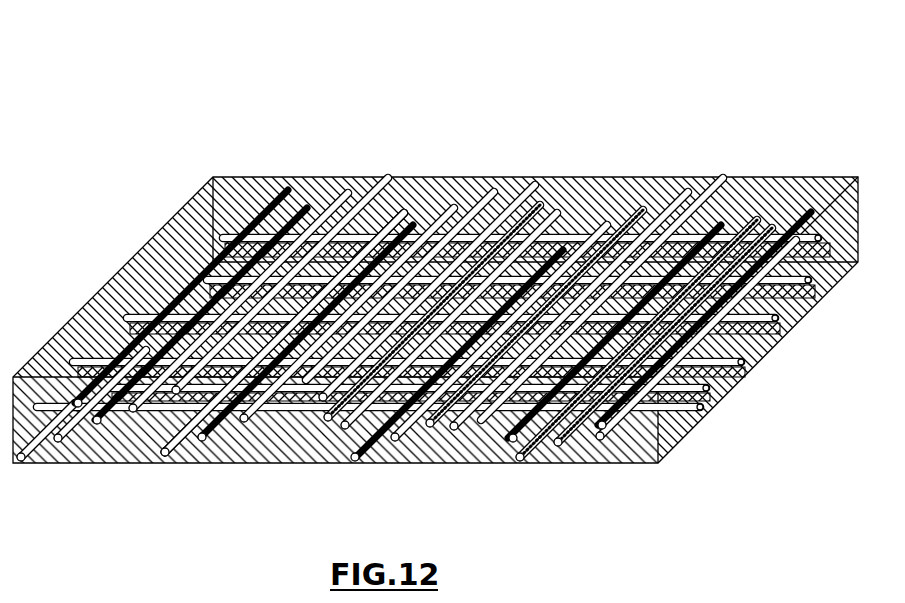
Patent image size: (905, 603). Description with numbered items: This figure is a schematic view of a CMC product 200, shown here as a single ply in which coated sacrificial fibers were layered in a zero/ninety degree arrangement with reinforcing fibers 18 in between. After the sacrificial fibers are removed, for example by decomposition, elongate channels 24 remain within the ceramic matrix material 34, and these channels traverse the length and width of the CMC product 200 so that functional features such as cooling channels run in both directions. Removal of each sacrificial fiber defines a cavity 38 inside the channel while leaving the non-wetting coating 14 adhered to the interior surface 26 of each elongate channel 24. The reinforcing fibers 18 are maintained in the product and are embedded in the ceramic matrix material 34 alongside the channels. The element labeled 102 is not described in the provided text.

The CMC product 200 is at (435, 281).
The elongate channels 24 is at (372, 178).
The reinforcing fibers 18 is at (807, 210).
The ceramic matrix material 34 is at (124, 290).
The transverse rods 102 is at (706, 390).
The interior surface 26 is at (185, 452).
The non-wetting coating 14 is at (247, 423).
The cavity 38 is at (520, 460).